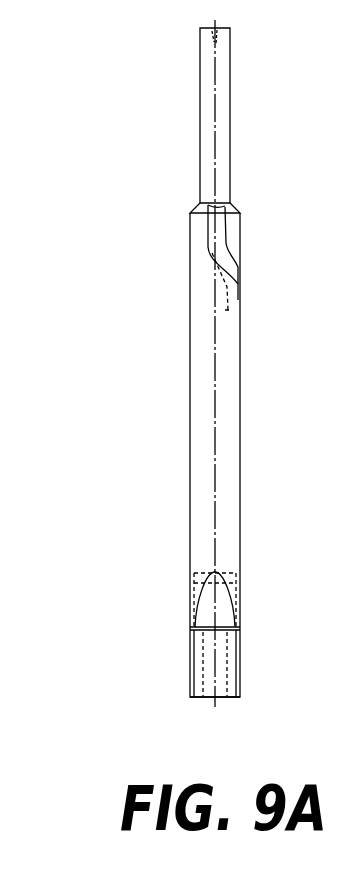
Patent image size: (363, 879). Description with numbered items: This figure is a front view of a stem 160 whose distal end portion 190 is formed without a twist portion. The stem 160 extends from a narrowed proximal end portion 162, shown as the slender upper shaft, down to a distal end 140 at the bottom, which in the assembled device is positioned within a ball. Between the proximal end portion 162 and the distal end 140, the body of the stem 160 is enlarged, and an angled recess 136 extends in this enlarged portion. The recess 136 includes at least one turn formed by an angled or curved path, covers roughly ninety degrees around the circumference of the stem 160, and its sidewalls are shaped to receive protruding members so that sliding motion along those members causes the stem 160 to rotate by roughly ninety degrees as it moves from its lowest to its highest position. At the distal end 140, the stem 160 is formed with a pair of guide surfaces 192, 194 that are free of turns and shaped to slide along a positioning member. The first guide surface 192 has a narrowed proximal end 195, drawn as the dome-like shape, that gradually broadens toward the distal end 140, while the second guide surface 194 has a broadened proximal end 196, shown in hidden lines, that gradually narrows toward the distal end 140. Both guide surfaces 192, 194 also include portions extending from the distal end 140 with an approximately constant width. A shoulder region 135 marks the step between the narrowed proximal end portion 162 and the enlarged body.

The stem 160 is at (301, 121).
The proximal end portion 162 is at (208, 112).
The shoulder 135 is at (233, 207).
The angled recess 136 is at (208, 233).
The distal end portion 190 is at (123, 650).
The narrowed proximal end 195 is at (230, 580).
The broadened proximal end 196 is at (197, 583).
The first guide surface 192 is at (233, 678).
The second guide surface 194 is at (213, 652).
The distal end 140 is at (232, 698).